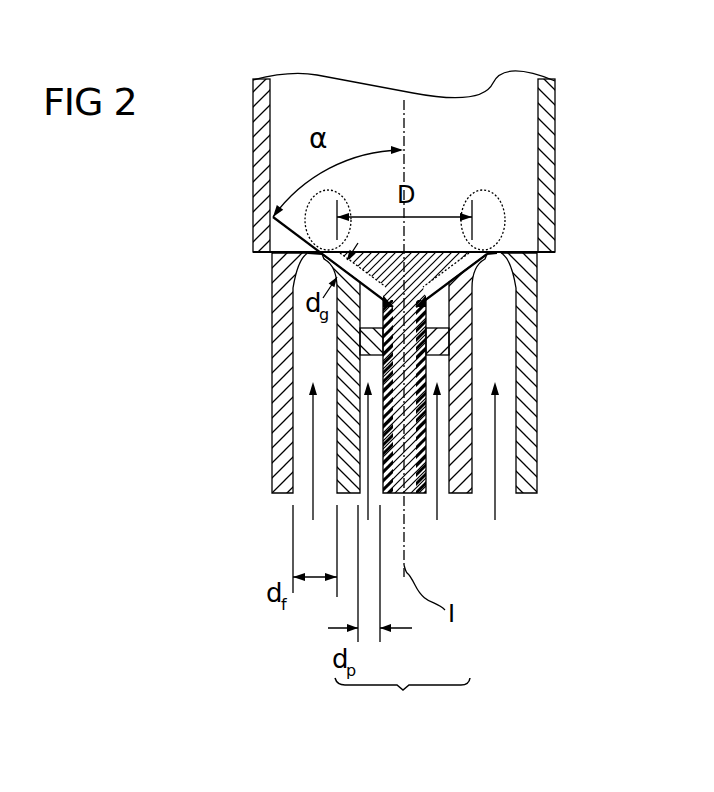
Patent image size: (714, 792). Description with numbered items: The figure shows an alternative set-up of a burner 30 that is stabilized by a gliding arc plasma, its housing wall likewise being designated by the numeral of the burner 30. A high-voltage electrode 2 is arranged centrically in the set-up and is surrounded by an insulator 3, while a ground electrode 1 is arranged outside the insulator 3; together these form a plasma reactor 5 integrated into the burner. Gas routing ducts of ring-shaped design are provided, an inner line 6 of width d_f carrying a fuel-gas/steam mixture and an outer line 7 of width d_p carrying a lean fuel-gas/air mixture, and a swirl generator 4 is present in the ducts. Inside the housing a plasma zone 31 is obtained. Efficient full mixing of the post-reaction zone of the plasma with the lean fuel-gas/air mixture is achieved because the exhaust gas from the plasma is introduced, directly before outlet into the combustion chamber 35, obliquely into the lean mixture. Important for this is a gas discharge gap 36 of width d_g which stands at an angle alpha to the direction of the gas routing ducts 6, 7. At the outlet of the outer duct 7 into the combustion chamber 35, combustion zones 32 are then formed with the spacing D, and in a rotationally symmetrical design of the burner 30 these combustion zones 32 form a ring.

The ground electrode 1 is at (456, 452).
The high-voltage electrode 2 is at (403, 495).
The insulator 3 is at (425, 408).
The swirl generator 4 is at (440, 345).
The plasma reactor 5 is at (402, 700).
The inner line 6 is at (362, 494).
The outer line 7 is at (292, 463).
The burner 30 is at (272, 397).
The plasma zone 31 is at (497, 257).
The combustion zone 32 is at (487, 207).
The combustion chamber 35 is at (448, 110).
The gas discharge gap 36 is at (323, 262).